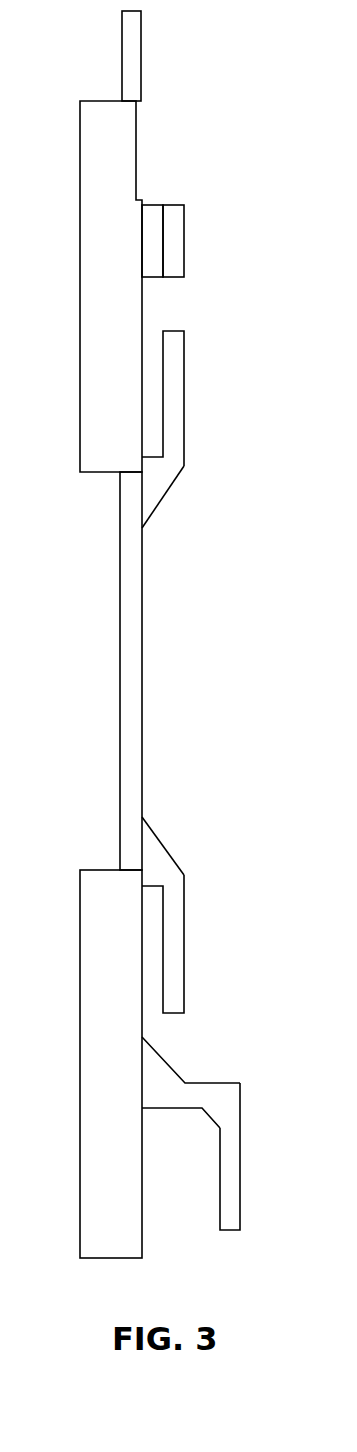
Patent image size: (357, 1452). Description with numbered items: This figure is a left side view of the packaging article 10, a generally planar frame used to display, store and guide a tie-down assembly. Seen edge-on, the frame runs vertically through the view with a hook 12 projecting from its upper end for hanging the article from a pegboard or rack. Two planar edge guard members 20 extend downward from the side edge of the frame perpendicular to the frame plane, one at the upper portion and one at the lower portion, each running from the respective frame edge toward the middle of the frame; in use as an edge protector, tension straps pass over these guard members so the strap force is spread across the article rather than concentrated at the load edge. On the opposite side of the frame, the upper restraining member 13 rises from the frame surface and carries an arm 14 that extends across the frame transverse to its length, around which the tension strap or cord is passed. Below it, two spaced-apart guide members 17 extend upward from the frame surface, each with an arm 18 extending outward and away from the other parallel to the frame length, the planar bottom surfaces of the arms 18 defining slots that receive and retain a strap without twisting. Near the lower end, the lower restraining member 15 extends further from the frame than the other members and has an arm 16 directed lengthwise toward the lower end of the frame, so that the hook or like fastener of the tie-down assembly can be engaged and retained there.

The packaging article 10 is at (188, 626).
The hook 12 is at (143, 63).
The upper restraining member 13 is at (152, 210).
The arm 14 is at (184, 252).
The lower restraining member 15 is at (158, 1082).
The arm 16 is at (242, 1142).
The guide member 17 is at (160, 482).
The arm 18 is at (183, 408).
The edge guard member 20 is at (80, 279).